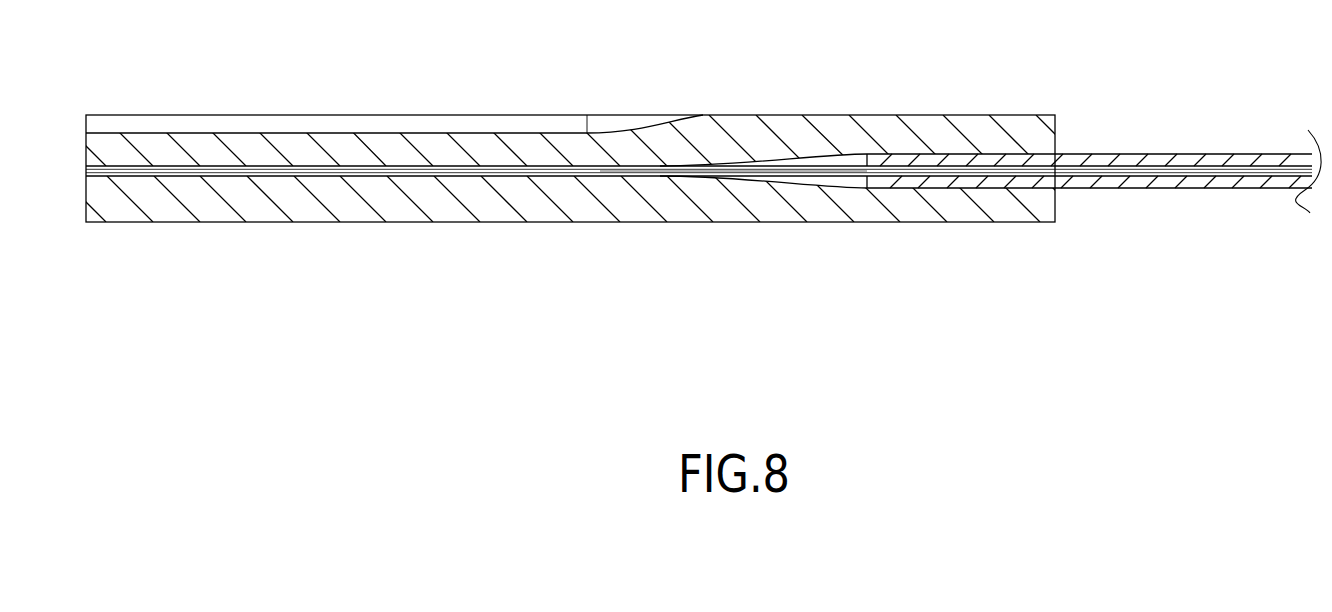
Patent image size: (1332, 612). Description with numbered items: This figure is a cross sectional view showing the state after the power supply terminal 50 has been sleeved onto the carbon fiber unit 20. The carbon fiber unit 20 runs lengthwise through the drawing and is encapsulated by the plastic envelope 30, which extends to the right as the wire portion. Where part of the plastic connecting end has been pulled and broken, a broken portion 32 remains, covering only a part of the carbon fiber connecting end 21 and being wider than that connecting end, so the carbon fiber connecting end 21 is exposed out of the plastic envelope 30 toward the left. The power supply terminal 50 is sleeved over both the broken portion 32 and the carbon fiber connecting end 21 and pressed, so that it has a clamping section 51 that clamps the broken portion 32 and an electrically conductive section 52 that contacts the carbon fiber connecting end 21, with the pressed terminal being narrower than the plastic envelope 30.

The carbon fiber unit 20 is at (1142, 173).
The carbon fiber connecting end 21 is at (800, 168).
The plastic envelope 30 is at (1205, 155).
The broken portion 32 is at (952, 162).
The power supply terminal 50 is at (692, 114).
The clamping section 51 is at (1005, 212).
The electrically conductive section 52 is at (297, 203).